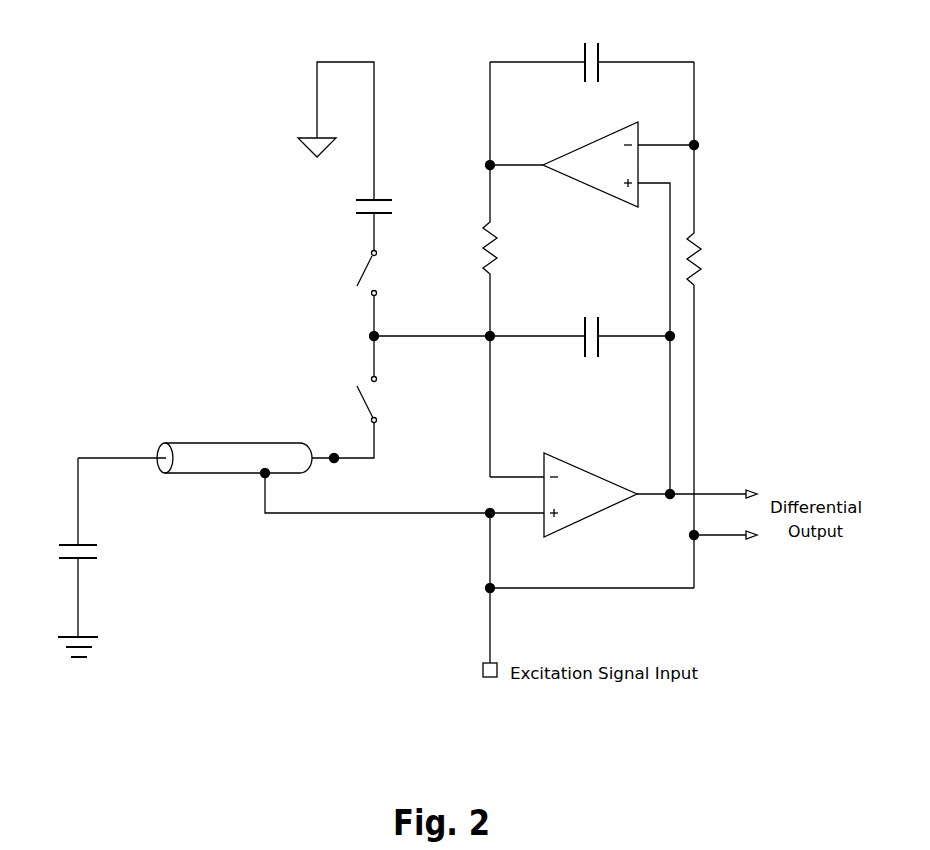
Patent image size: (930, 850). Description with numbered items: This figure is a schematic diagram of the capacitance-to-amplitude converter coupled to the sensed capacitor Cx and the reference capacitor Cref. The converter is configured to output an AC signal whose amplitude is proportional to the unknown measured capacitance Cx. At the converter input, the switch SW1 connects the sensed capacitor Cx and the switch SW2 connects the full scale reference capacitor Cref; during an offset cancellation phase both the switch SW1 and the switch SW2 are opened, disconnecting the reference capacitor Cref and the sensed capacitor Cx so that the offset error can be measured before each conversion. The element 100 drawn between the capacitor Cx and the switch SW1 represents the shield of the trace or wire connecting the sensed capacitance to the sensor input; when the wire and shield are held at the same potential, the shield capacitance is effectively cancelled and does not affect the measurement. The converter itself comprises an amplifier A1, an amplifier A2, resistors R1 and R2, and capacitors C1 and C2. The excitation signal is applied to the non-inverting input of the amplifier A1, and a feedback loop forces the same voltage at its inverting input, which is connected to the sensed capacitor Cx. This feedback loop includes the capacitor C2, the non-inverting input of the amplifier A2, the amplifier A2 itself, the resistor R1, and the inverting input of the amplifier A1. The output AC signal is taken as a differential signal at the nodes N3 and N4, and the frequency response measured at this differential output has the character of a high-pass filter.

The shield 100 is at (231, 443).
The reference capacitor Cref is at (394, 225).
The sensed capacitor Cx is at (92, 547).
The switch SW1 is at (367, 418).
The switch SW2 is at (389, 294).
The capacitor C1 is at (592, 49).
The capacitor C2 is at (590, 323).
The resistor R1 is at (504, 247).
The resistor R2 is at (708, 258).
The amplifier A1 is at (607, 495).
The amplifier A2 is at (592, 229).
The node N3 is at (712, 483).
The node N4 is at (724, 551).